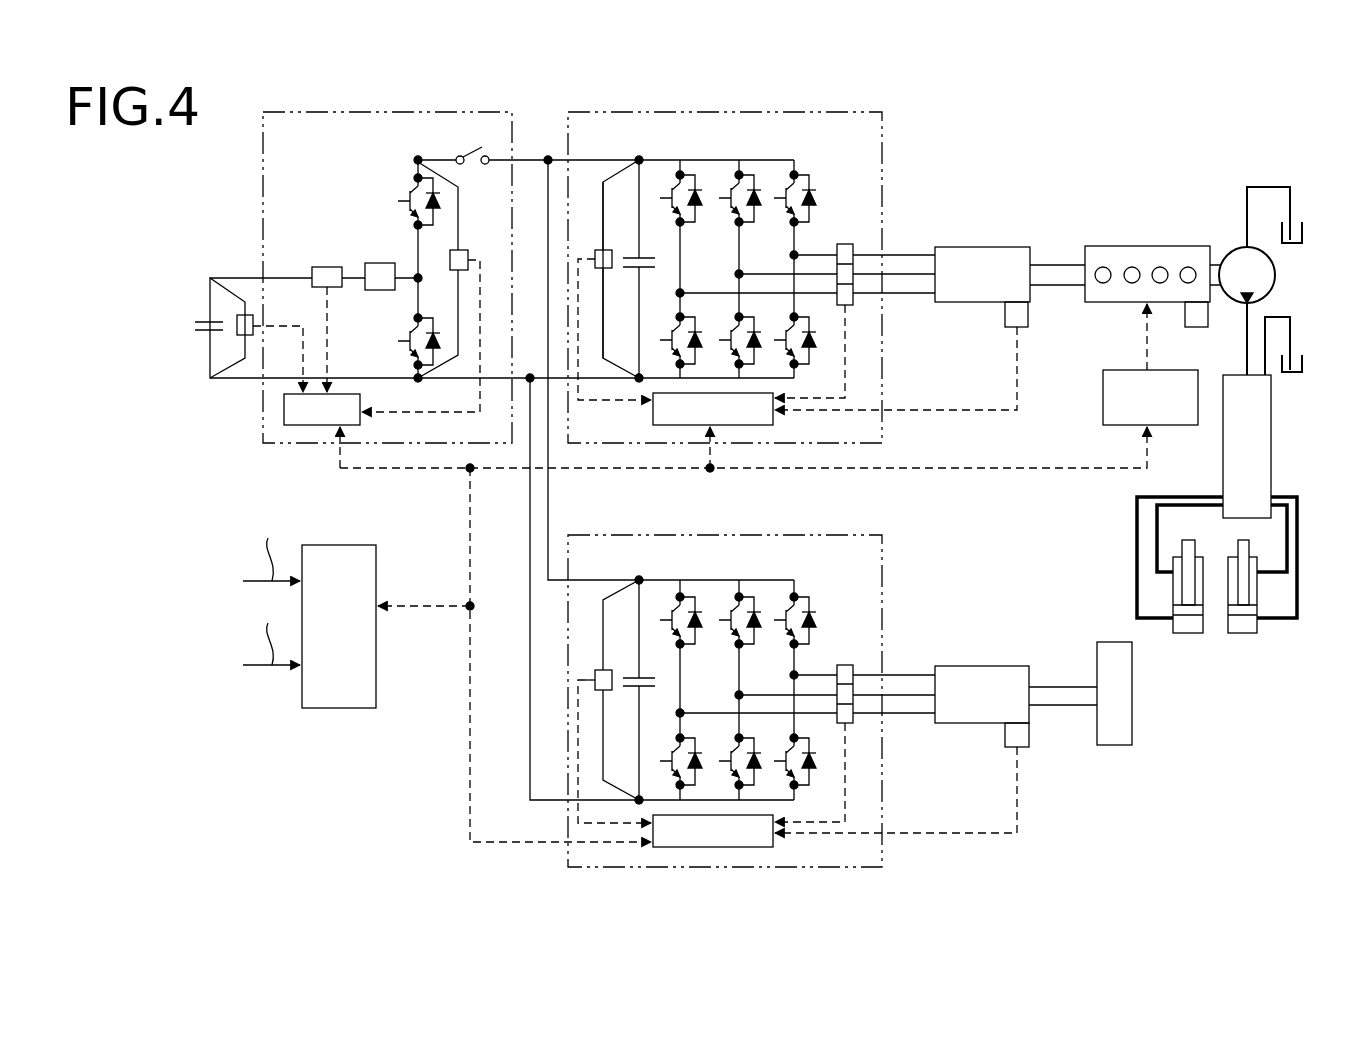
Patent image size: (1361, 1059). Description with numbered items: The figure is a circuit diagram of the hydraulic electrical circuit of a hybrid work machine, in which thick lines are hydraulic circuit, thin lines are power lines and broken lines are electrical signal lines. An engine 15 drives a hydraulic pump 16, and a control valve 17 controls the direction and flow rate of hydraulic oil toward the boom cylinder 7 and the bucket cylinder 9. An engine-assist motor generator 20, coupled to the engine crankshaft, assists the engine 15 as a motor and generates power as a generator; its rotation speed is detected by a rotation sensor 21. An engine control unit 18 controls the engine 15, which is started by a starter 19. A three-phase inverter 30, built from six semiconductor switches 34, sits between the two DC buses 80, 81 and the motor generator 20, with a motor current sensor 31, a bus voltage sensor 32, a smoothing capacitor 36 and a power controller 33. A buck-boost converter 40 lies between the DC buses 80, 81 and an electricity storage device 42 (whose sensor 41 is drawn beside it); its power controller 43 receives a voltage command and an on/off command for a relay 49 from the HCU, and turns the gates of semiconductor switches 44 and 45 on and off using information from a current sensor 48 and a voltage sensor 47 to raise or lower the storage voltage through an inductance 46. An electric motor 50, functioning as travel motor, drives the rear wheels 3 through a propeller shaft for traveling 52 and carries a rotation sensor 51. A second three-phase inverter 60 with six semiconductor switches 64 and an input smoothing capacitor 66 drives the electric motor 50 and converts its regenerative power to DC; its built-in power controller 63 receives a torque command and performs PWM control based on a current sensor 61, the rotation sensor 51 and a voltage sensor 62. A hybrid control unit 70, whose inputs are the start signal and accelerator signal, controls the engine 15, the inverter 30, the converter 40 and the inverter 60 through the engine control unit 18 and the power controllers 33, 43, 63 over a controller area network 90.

The rear wheels 3 is at (1115, 642).
The boom cylinder 7 is at (1190, 633).
The bucket cylinder 9 is at (1243, 633).
The engine 15 is at (1160, 246).
The hydraulic pump 16 is at (1228, 255).
The control valve 17 is at (1271, 478).
The engine control unit 18 is at (1183, 425).
The starter 19 is at (1190, 331).
The motor generator 20 is at (993, 247).
The rotation sensor 21 is at (1024, 330).
The inverter 30 is at (756, 112).
The motor current sensor 31 is at (845, 243).
The bus voltage sensor 32 is at (600, 247).
The power controller 33 is at (773, 420).
The semiconductor switches 34 is at (810, 189).
The capacitor 36 is at (630, 256).
The buck-boost converter 40 is at (318, 112).
The current sensor of storage device 41 is at (240, 346).
The electricity storage device 42 is at (203, 320).
The power controller 43 is at (313, 425).
The semiconductor switch 44 is at (406, 192).
The semiconductor switch 45 is at (406, 337).
The inductance 46 is at (380, 263).
The voltage sensor 47 is at (466, 250).
The current sensor 48 is at (327, 267).
The relay 49 is at (470, 148).
The electric motor 50 is at (993, 666).
The rotation sensor 51 is at (1024, 750).
The propeller shaft for traveling 52 is at (1070, 687).
The inverter 60 is at (723, 535).
The current sensor 61 is at (845, 665).
The voltage sensor 62 is at (600, 670).
The power controller 63 is at (773, 845).
The semiconductor switches 64 is at (810, 610).
The capacitor 66 is at (631, 677).
The hybrid control unit 70 is at (376, 562).
The DC bus 80 is at (598, 160).
The DC bus 81 is at (607, 380).
The controller area network 90 is at (945, 468).